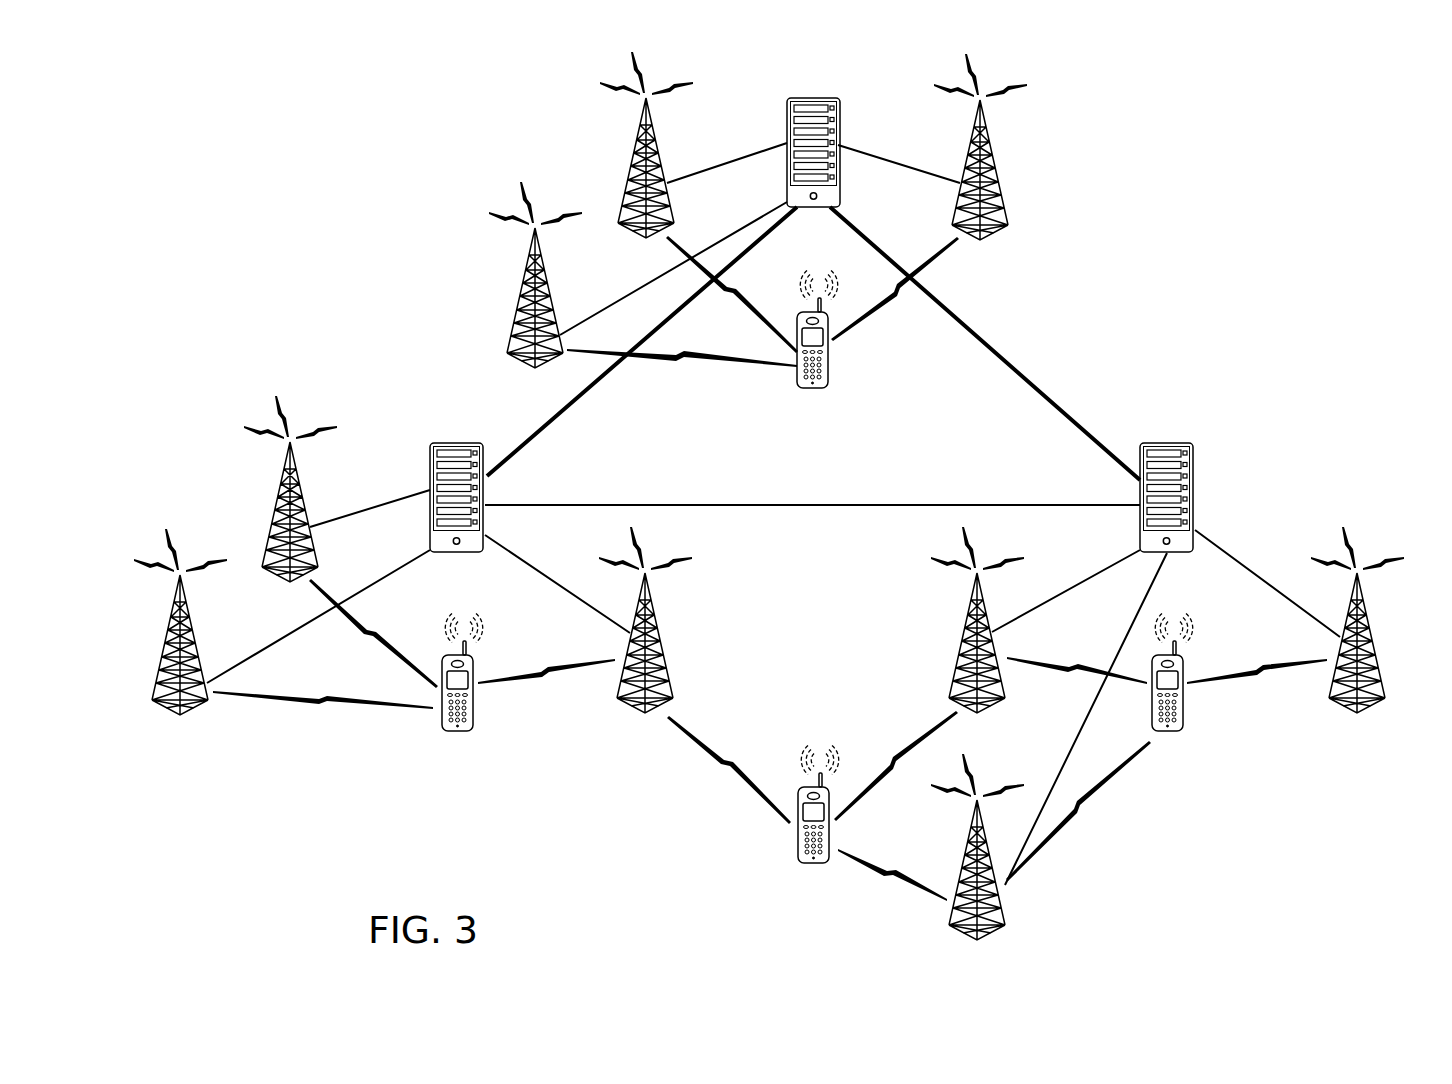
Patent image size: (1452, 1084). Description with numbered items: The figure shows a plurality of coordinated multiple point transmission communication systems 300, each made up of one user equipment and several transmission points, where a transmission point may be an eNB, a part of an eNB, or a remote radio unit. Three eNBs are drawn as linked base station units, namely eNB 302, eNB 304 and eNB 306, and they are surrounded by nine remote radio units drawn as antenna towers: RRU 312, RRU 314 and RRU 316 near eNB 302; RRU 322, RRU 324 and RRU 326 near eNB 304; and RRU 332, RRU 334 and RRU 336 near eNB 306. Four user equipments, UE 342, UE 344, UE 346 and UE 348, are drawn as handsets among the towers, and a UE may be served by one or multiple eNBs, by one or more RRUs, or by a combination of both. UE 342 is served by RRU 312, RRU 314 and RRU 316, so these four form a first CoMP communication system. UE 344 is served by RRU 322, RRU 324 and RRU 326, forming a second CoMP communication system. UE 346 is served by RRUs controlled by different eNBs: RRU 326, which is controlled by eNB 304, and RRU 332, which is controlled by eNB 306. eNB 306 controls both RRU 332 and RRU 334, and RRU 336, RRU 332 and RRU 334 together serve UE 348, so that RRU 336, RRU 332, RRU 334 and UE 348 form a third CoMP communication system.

The CoMP communication systems 300 is at (1204, 182).
The eNB 302 is at (787, 125).
The eNB 304 is at (430, 480).
The eNB 306 is at (1195, 478).
The RRU 312 is at (636, 144).
The RRU 314 is at (511, 339).
The RRU 316 is at (1004, 206).
The RRU 322 is at (280, 486).
The RRU 324 is at (153, 684).
The RRU 326 is at (672, 684).
The RRU 332 is at (951, 683).
The RRU 334 is at (951, 930).
The RRU 336 is at (1384, 684).
The UE 342 is at (830, 385).
The UE 344 is at (441, 728).
The UE 346 is at (797, 855).
The UE 348 is at (1184, 725).